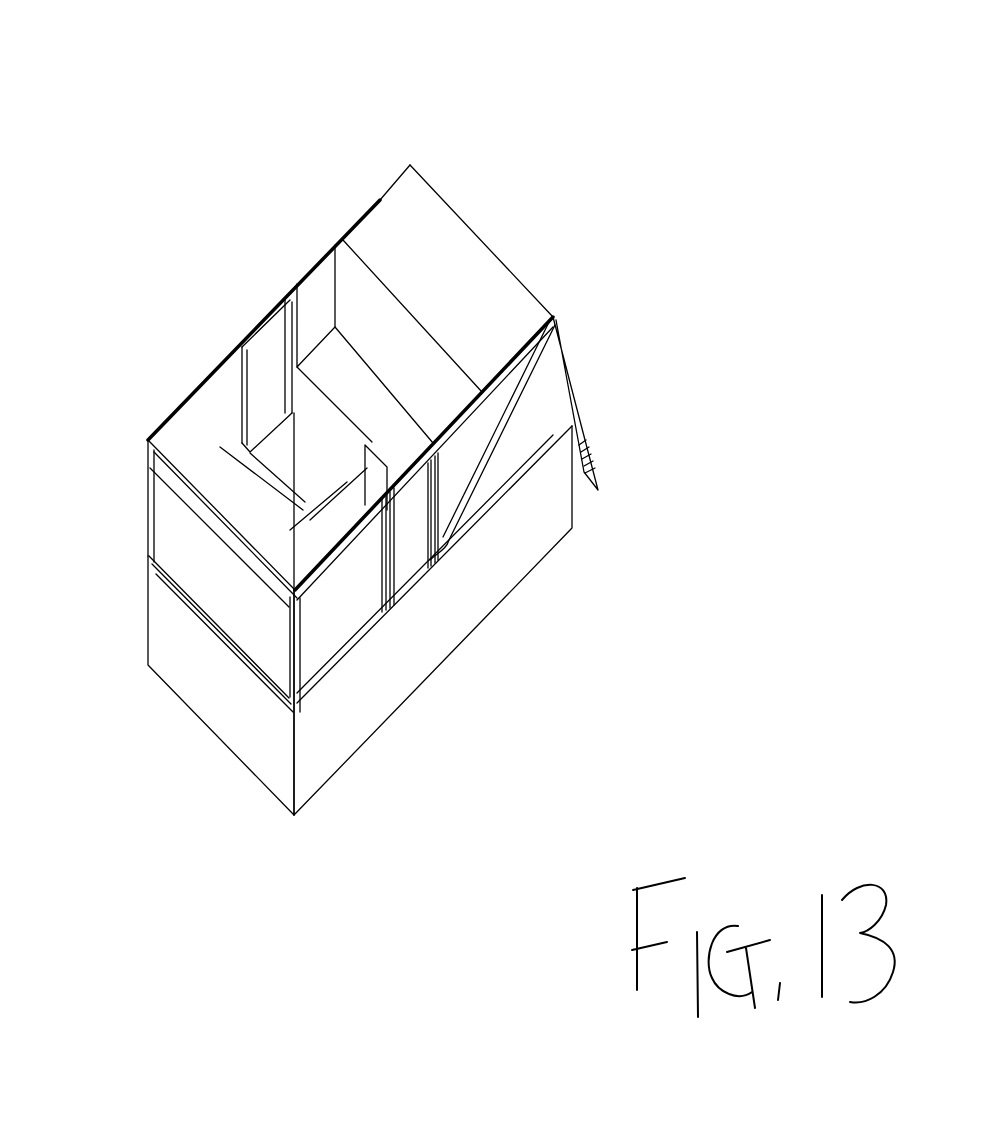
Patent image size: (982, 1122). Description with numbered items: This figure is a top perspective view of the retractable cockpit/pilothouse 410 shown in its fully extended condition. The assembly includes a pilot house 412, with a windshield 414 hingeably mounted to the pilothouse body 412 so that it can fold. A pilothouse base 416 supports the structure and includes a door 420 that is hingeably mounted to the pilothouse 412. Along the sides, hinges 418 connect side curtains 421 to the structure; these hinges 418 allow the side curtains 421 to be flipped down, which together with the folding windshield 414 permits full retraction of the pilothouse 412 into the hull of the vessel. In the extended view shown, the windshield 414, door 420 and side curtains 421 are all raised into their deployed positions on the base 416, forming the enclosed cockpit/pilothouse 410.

The retractable cockpit/pilothouse 410 is at (775, 98).
The pilot house 412 is at (415, 620).
The windshield 414 is at (567, 429).
The pilothouse base 416 is at (302, 311).
The hinges 418 is at (361, 381).
The door 420 is at (362, 436).
The side curtains 421 is at (212, 417).